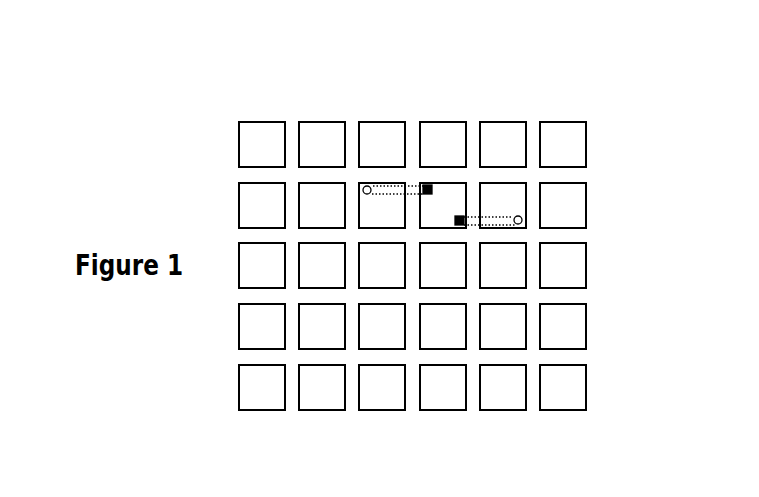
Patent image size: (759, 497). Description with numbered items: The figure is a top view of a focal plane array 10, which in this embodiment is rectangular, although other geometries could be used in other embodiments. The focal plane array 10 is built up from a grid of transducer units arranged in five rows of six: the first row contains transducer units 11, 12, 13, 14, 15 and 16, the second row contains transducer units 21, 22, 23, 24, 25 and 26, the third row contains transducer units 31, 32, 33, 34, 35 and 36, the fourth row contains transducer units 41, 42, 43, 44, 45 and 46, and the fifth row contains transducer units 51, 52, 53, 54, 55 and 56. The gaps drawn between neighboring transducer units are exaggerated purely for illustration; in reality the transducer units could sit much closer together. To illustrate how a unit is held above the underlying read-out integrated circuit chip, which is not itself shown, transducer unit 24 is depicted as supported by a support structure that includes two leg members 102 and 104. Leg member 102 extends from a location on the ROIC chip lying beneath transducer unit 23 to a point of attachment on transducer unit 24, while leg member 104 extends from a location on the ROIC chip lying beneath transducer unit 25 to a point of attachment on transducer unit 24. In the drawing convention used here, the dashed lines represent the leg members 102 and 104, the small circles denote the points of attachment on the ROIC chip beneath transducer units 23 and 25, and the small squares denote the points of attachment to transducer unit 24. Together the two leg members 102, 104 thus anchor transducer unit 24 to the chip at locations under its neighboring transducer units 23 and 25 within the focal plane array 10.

The focal plane array 10 is at (634, 98).
The leg member 102 is at (393, 187).
The leg member 104 is at (513, 216).
The transducer unit 11 is at (251, 153).
The transducer unit 12 is at (311, 153).
The transducer unit 13 is at (371, 153).
The transducer unit 14 is at (432, 153).
The transducer unit 15 is at (492, 153).
The transducer unit 16 is at (552, 153).
The transducer unit 21 is at (251, 214).
The transducer unit 22 is at (311, 214).
The transducer unit 23 is at (371, 214).
The transducer unit 24 is at (432, 214).
The transducer unit 25 is at (492, 214).
The transducer unit 26 is at (552, 214).
The transducer unit 31 is at (251, 274).
The transducer unit 32 is at (311, 274).
The transducer unit 33 is at (371, 274).
The transducer unit 34 is at (432, 274).
The transducer unit 35 is at (492, 274).
The transducer unit 36 is at (552, 274).
The transducer unit 41 is at (251, 335).
The transducer unit 42 is at (311, 335).
The transducer unit 43 is at (371, 335).
The transducer unit 44 is at (432, 335).
The transducer unit 45 is at (492, 335).
The transducer unit 46 is at (552, 335).
The transducer unit 51 is at (251, 396).
The transducer unit 52 is at (311, 396).
The transducer unit 53 is at (371, 396).
The transducer unit 54 is at (432, 396).
The transducer unit 55 is at (492, 396).
The transducer unit 56 is at (552, 396).